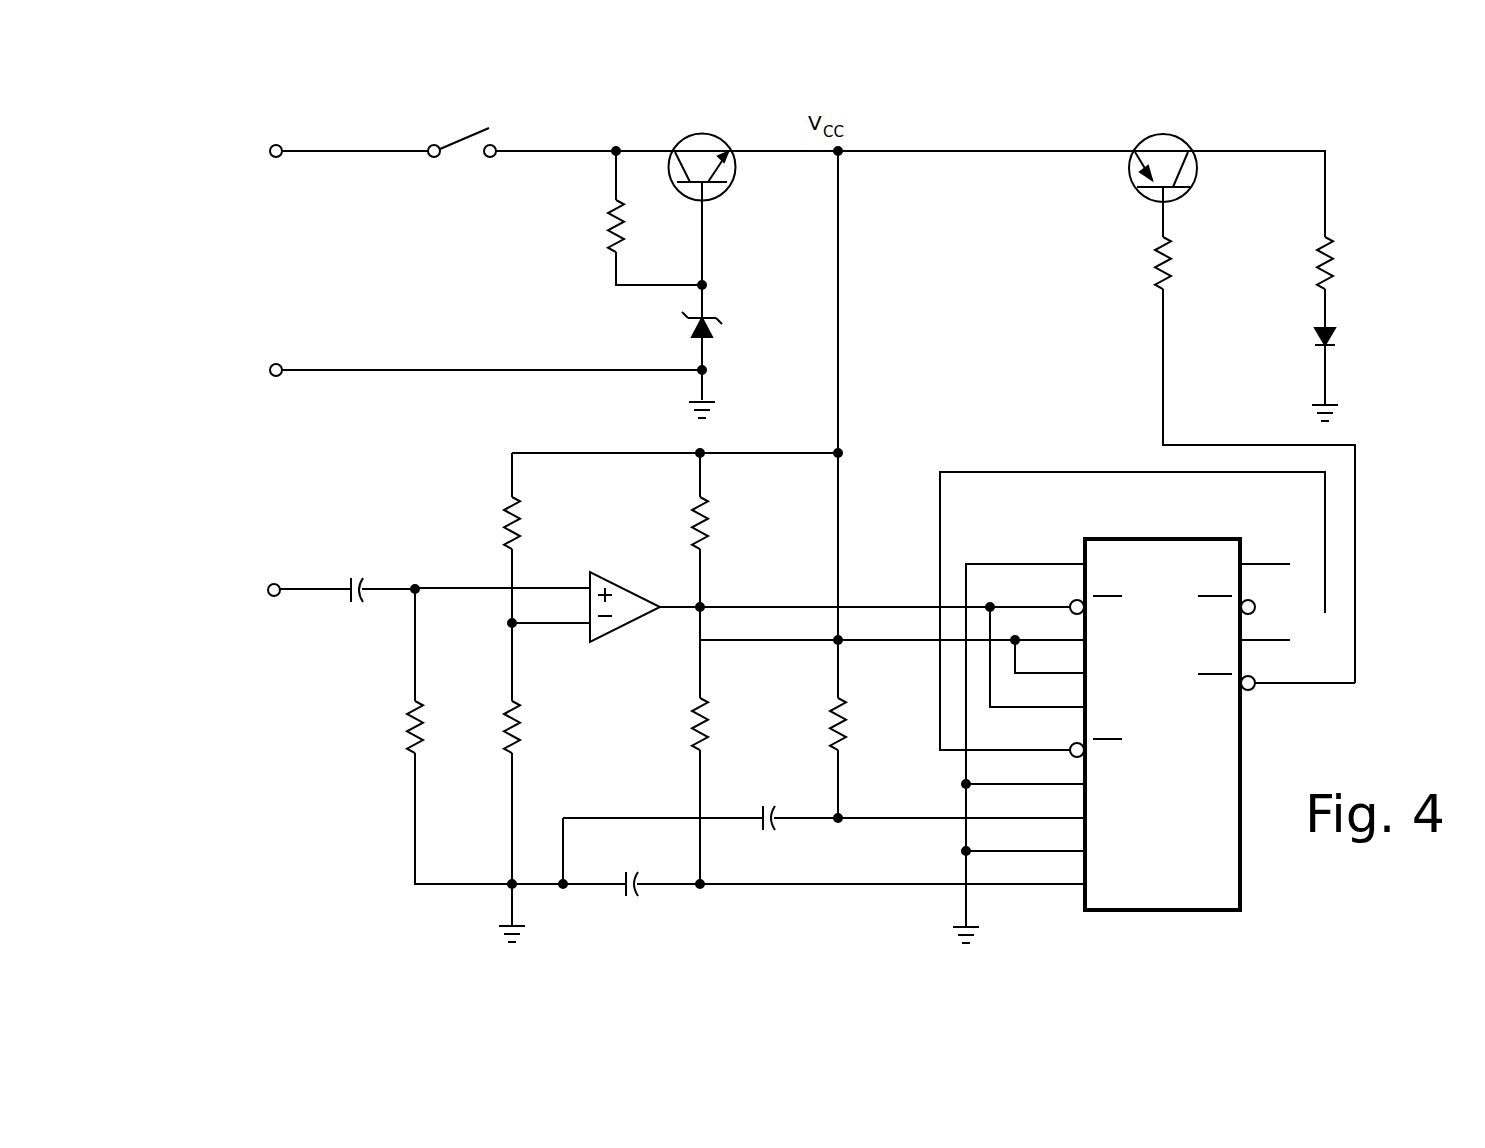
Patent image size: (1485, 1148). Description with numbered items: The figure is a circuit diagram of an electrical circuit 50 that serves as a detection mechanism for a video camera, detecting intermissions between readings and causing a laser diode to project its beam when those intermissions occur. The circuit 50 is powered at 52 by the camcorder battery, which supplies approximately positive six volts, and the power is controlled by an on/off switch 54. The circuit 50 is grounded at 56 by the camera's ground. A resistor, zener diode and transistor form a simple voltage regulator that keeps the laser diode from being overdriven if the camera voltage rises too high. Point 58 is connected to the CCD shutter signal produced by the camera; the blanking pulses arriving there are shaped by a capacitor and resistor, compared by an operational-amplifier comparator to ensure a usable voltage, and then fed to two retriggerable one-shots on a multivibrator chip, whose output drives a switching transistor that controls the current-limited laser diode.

The electrical circuit 50 is at (435, 736).
The power input point 52 is at (273, 157).
The on/off switch 54 is at (471, 133).
The ground point 56 is at (273, 376).
The CCD shutter signal point 58 is at (281, 585).